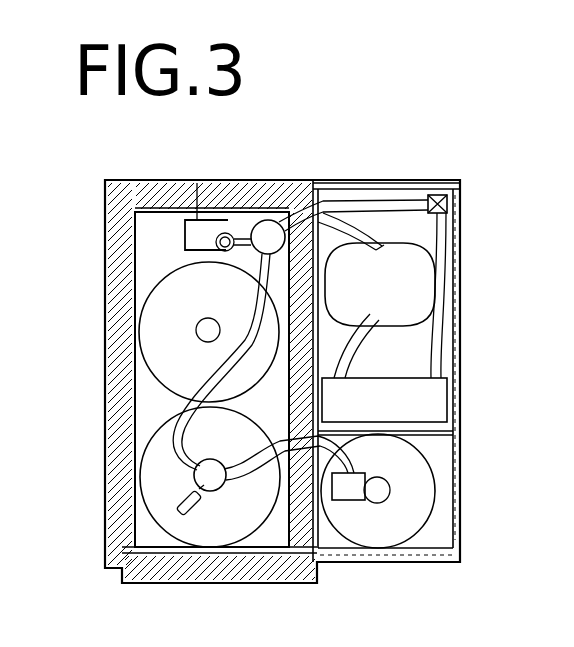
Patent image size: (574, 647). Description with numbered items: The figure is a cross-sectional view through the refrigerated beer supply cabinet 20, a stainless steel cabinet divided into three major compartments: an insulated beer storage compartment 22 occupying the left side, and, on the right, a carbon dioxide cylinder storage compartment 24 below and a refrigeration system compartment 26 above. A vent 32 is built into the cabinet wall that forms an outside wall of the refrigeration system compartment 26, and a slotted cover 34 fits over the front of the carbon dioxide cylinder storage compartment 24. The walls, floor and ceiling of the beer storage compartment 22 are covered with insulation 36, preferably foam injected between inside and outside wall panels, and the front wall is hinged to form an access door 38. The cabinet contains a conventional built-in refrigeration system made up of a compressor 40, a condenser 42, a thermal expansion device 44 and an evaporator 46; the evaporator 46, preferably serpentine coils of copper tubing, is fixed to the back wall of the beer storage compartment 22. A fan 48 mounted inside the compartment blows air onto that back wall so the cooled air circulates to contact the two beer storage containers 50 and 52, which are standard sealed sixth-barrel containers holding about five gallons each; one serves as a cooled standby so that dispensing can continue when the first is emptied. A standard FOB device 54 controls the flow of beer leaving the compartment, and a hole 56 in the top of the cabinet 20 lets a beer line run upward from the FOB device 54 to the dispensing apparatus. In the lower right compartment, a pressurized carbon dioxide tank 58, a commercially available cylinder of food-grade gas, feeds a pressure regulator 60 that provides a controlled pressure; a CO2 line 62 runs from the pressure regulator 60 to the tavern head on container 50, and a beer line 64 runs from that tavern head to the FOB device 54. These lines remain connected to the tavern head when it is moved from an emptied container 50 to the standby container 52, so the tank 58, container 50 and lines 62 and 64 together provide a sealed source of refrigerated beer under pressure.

The refrigerated beer supply cabinet 20 is at (100, 509).
The insulated beer storage compartment 22 is at (155, 258).
The carbon dioxide cylinder storage compartment 24 is at (461, 526).
The refrigeration system compartment 26 is at (447, 369).
The vent 32 is at (463, 260).
The slotted cover 34 is at (383, 562).
The insulation 36 is at (228, 190).
The access door 38 is at (240, 585).
The compressor 40 is at (405, 305).
The condenser 42 is at (423, 433).
The thermal expansion device 44 is at (443, 192).
The evaporator 46 is at (197, 183).
The fan 48 is at (186, 218).
The beer storage container 50 is at (157, 502).
The beer storage container 52 is at (167, 303).
The FOB device 54 is at (273, 212).
The hole 56 is at (245, 228).
The pressurized carbon dioxide tank 58 is at (408, 520).
The pressure regulator 60 is at (352, 500).
The CO2 line 62 is at (280, 440).
The beer line 64 is at (207, 392).